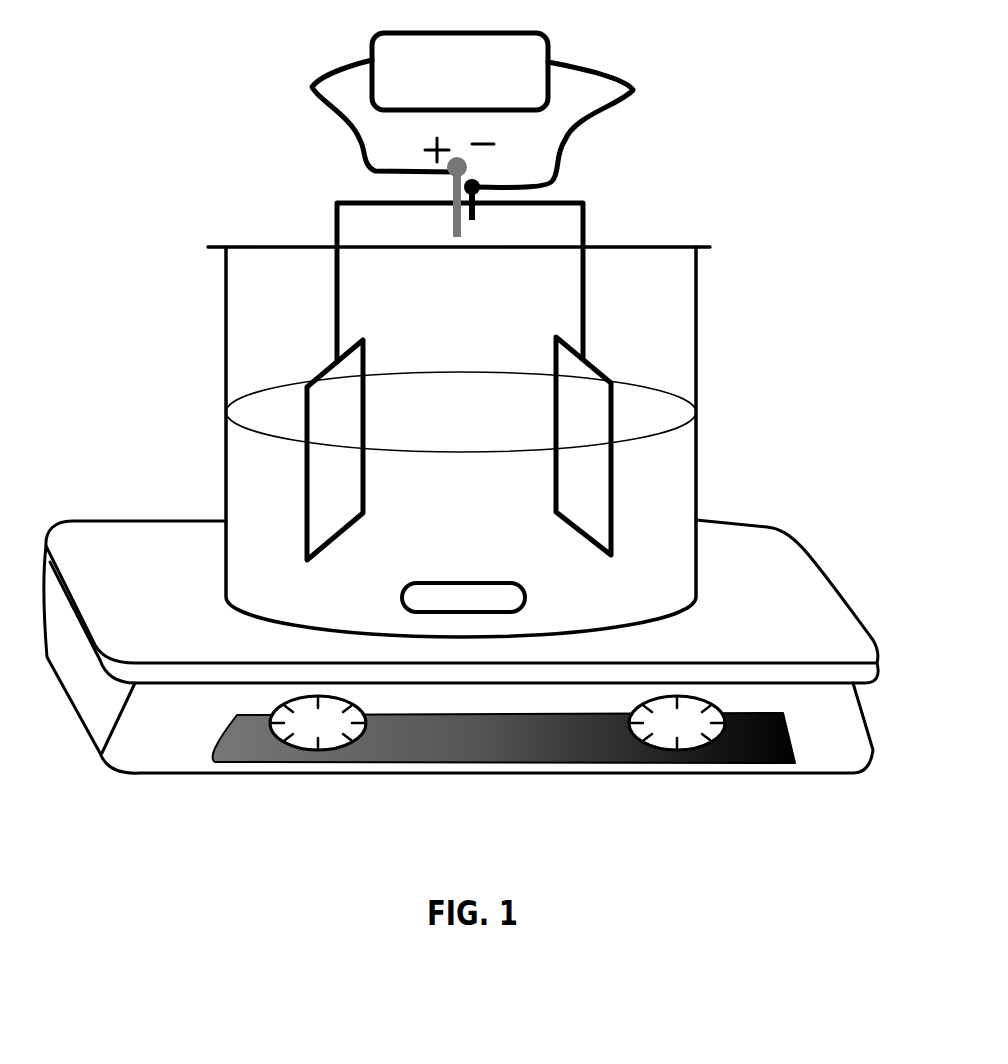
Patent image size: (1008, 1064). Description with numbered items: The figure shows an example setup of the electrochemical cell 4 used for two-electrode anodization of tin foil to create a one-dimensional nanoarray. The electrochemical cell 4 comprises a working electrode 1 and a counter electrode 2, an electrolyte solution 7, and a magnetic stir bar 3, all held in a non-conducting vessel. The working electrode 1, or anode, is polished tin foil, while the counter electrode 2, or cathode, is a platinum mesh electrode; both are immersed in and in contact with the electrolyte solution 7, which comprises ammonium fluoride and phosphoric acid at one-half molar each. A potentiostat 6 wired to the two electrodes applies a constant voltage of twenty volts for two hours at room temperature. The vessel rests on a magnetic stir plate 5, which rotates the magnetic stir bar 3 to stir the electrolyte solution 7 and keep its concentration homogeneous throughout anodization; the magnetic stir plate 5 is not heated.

The working electrode 1 is at (330, 412).
The counter electrode 2 is at (583, 410).
The magnetic stir bar 3 is at (528, 602).
The electrochemical cell 4 is at (720, 212).
The magnetic stir plate 5 is at (155, 555).
The potentiostat 6 is at (495, 73).
The electrolyte solution 7 is at (643, 507).